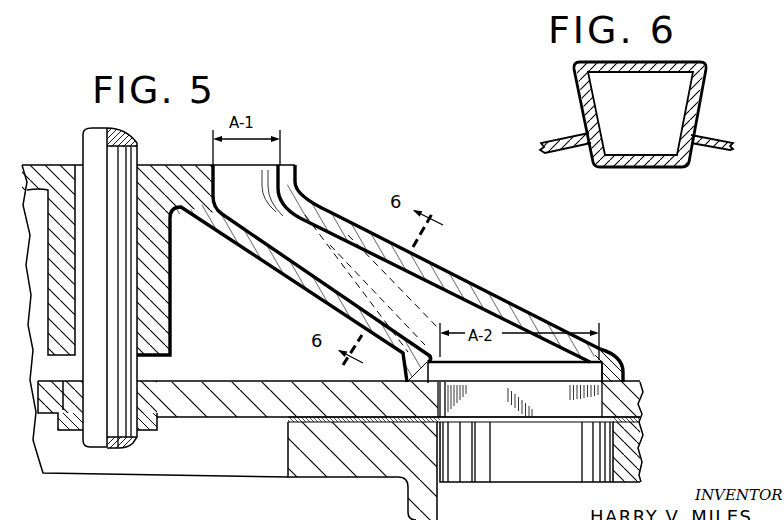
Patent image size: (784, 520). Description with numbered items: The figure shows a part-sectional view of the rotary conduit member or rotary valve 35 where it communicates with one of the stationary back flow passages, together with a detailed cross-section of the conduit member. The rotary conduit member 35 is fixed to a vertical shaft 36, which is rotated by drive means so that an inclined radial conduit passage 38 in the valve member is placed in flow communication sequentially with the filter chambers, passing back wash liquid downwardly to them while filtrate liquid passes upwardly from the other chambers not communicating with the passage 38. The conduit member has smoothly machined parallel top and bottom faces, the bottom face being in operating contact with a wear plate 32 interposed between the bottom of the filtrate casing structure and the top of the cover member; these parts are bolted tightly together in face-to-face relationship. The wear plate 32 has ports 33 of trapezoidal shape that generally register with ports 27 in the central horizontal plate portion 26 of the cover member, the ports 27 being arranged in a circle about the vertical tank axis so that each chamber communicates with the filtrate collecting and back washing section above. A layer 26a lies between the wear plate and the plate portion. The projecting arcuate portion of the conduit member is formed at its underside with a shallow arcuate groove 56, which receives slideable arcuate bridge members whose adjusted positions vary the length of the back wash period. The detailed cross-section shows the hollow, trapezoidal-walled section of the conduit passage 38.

In FIG. 5, the central horizontal plate portion 26 is at (623, 476).
In FIG. 5, the gasket layer 26a is at (633, 428).
In FIG. 5, the port 27 is at (540, 465).
In FIG. 5, the wear plate 32 is at (630, 403).
In FIG. 5, the port 33 is at (495, 414).
In FIG. 5, the rotary conduit member 35 is at (636, 368).
In FIG. 5, the vertical shaft 36 is at (136, 157).
In FIG. 5, the inclined radial conduit passage 38 is at (413, 303).
In FIG. 6, the inclined radial conduit passage 38 is at (646, 113).
In FIG. 5, the shallow arcuate groove 56 is at (489, 382).